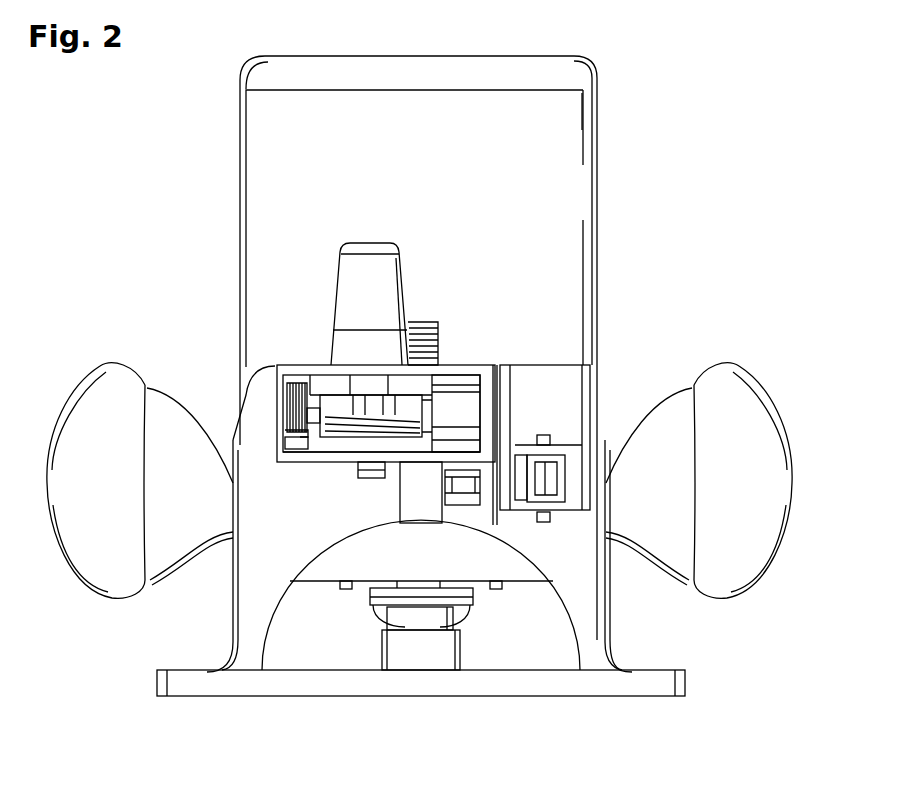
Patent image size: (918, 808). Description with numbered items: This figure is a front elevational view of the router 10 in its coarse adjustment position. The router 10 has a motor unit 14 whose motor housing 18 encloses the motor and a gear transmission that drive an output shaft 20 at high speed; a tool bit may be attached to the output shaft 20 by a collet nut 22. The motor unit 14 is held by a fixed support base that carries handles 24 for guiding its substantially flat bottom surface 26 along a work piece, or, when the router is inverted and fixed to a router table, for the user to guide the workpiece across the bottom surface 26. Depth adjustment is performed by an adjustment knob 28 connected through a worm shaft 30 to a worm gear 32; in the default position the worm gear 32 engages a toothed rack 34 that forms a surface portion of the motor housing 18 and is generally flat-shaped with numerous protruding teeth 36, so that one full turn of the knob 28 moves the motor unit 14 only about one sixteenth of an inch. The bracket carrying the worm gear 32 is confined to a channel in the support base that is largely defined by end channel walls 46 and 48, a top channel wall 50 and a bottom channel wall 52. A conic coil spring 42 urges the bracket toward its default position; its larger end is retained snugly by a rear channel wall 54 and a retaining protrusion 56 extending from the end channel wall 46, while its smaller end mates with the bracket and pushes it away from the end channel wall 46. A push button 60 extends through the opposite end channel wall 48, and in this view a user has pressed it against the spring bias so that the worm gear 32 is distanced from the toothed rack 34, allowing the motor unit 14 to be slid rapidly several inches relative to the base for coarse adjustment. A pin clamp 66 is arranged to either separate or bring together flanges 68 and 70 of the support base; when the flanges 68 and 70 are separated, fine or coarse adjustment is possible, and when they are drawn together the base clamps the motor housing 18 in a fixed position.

The router 10 is at (204, 179).
The motor unit 14 is at (570, 112).
The motor housing 18 is at (568, 262).
The output shaft 20 is at (372, 602).
The collet nut 22 is at (493, 647).
The handles 24 is at (97, 378).
The bottom surface 26 is at (645, 698).
The adjustment knob 28 is at (383, 282).
The worm shaft 30 is at (367, 398).
The worm gear 32 is at (360, 442).
The toothed rack 34 is at (435, 325).
The teeth 36 is at (436, 342).
The coil spring 42 is at (280, 393).
The end channel wall 46 is at (283, 400).
The end channel wall 48 is at (487, 445).
The top channel wall 50 is at (302, 368).
The bottom channel wall 52 is at (323, 458).
The rear channel wall 54 is at (303, 452).
The retaining protrusion 56 is at (288, 433).
The push button 60 is at (470, 405).
The pin clamp 66 is at (548, 482).
The flange 68 is at (480, 518).
The flange 70 is at (510, 525).